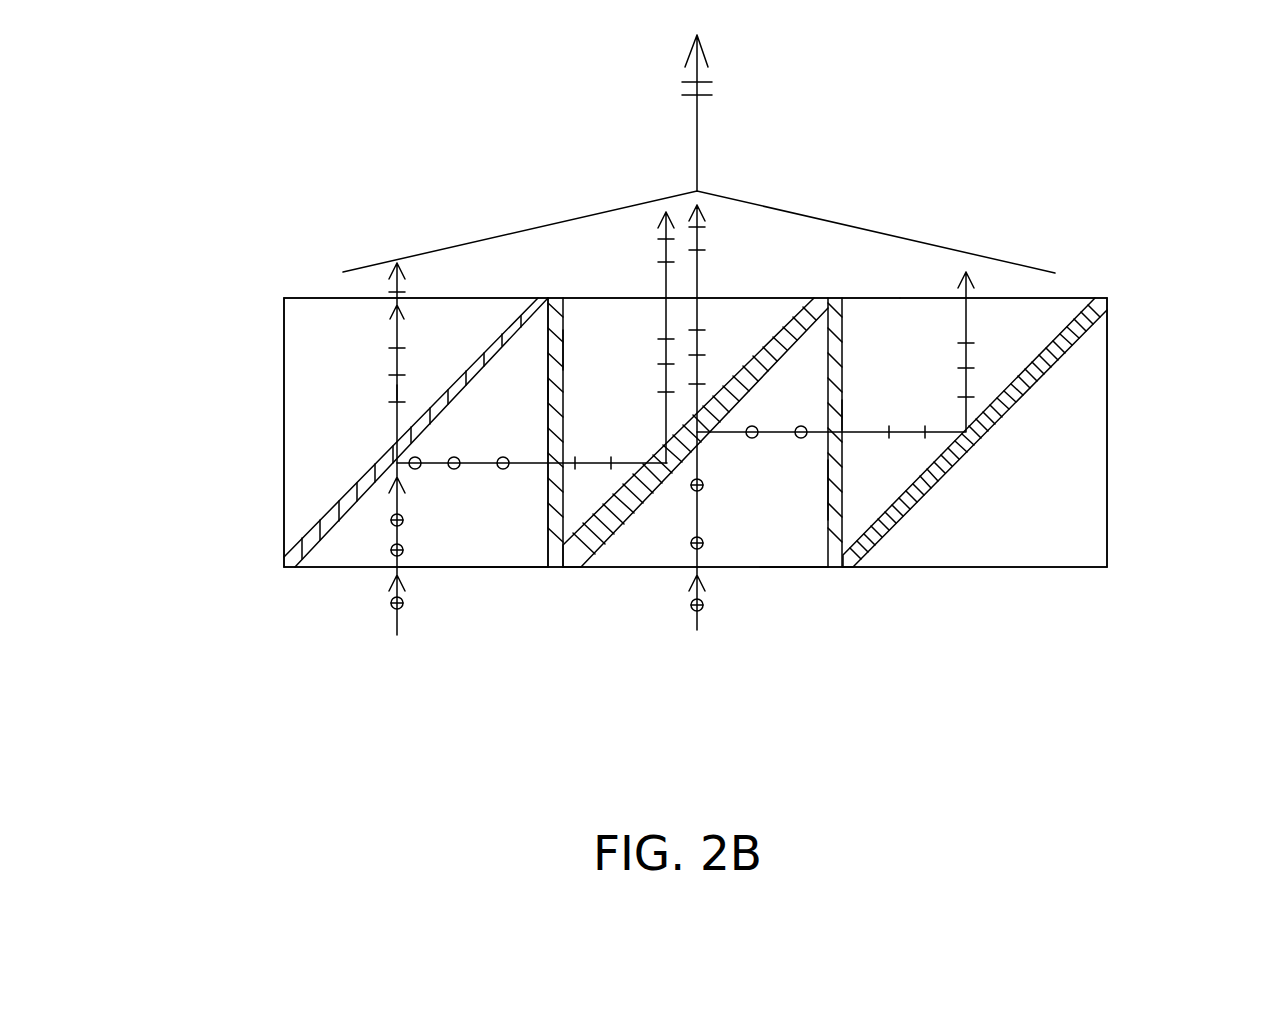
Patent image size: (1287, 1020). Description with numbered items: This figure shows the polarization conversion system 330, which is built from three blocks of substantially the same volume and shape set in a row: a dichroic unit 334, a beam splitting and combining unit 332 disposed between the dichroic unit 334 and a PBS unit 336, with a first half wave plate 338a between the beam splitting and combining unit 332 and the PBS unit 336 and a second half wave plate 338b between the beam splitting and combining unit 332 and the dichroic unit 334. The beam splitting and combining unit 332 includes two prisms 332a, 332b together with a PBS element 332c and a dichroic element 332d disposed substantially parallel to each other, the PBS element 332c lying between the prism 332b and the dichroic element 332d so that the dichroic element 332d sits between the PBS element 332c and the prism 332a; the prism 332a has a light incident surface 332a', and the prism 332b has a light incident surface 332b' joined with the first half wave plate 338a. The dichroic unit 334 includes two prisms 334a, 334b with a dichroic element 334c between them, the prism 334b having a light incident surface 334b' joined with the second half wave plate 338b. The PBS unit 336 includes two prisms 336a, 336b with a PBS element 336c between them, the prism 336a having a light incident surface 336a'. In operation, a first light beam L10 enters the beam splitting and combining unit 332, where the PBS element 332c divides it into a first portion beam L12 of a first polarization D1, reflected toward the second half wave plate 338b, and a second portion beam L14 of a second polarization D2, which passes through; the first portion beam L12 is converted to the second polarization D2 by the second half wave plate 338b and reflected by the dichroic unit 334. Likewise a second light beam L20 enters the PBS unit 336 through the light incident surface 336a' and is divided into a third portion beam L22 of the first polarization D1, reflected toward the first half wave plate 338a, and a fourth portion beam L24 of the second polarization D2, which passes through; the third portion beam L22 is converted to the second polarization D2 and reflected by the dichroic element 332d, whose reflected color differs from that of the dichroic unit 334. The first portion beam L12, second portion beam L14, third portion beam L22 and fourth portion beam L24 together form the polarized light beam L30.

The polarization conversion system 330 is at (1258, 790).
The beam splitting and combining unit 332 is at (682, 529).
The prism 332a is at (785, 501).
The light incident surface 332a' is at (857, 627).
The prism 332b is at (695, 501).
The light incident surface 332b' is at (511, 252).
The PBS element 332c is at (623, 532).
The dichroic element 332d is at (624, 540).
The dichroic unit 334 is at (1057, 432).
The prism 334a is at (1068, 452).
The prism 334b is at (1125, 432).
The light incident surface 334b' is at (910, 247).
The dichroic element 334c is at (1055, 357).
The PBS unit 336 is at (330, 529).
The prism 336a is at (405, 503).
The light incident surface 336a' is at (474, 636).
The prism 336b is at (210, 503).
The PBS element 336c is at (307, 543).
The first half wave plate 338a is at (550, 388).
The second half wave plate 338b is at (830, 420).
The first light beam L10 is at (698, 523).
The first portion beam L12 is at (780, 440).
The second portion beam L14 is at (763, 298).
The second light beam L20 is at (397, 532).
The third portion beam L22 is at (477, 470).
The fourth portion beam L24 is at (397, 393).
The polarized light beam L30 is at (697, 110).
The first polarization D1 is at (455, 470).
The second polarization D2 is at (397, 347).